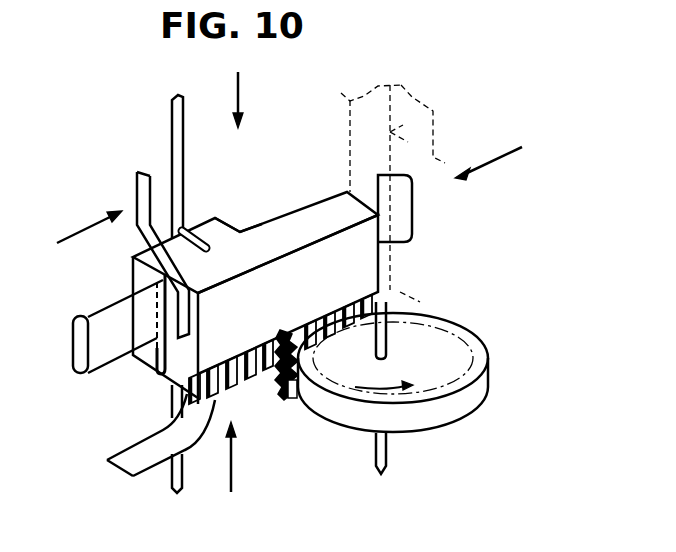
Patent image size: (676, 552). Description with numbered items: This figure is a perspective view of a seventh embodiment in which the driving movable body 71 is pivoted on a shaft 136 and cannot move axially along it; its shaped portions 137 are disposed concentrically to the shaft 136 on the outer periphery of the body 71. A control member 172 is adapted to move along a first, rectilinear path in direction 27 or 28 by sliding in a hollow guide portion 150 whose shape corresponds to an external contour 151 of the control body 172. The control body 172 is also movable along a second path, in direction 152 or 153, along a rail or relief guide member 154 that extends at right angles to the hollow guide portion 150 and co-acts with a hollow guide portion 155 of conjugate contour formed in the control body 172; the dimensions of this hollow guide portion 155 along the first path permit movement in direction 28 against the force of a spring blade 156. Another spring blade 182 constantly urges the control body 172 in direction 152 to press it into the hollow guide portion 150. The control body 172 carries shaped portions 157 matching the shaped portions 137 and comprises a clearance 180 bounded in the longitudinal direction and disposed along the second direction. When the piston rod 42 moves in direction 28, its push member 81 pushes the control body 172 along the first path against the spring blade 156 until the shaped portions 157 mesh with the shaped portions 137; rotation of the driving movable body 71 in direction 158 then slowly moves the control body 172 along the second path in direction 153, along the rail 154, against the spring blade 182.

The direction 27 is at (237, 478).
The direction 28 is at (244, 95).
The piston rod 42 is at (180, 133).
The driving movable body 71 is at (462, 350).
The push member 81 is at (196, 246).
The shaft 136 is at (390, 455).
The shaped portions 137 is at (284, 405).
The hollow guide portion 150 is at (352, 98).
The external contour 151 is at (357, 201).
The direction 152 is at (66, 232).
The direction 153 is at (493, 152).
The rail or relief guide member 154 is at (106, 322).
The hollow guide portion 155 is at (152, 376).
The spring blade 156 is at (193, 422).
The shaped portions 157 is at (270, 384).
The direction of rotation 158 is at (364, 383).
The control member 172 is at (346, 272).
The clearance 180 is at (242, 221).
The spring blade 182 is at (183, 318).